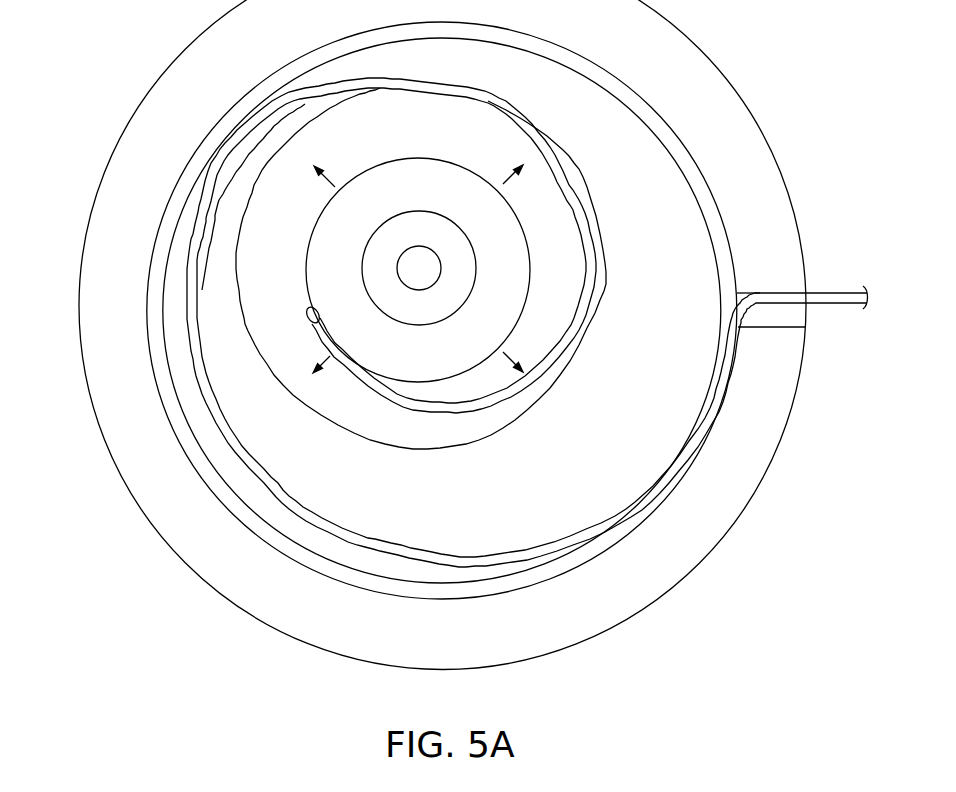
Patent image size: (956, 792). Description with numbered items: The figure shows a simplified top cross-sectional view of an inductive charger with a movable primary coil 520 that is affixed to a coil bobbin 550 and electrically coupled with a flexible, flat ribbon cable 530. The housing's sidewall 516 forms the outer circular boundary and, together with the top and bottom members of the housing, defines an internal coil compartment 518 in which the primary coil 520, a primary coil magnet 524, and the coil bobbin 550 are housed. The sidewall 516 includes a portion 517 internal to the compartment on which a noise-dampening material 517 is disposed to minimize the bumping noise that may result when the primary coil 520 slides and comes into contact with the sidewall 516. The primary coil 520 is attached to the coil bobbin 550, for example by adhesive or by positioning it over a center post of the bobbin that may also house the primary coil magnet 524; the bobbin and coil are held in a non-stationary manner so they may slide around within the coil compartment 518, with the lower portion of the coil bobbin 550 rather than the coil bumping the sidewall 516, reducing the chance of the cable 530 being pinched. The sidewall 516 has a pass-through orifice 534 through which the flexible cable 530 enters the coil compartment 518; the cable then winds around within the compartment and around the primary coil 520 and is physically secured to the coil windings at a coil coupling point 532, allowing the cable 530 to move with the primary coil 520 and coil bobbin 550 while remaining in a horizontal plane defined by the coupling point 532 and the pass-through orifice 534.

The sidewall 516 is at (111, 393).
The noise-dampening material 517 is at (455, 594).
The coil compartment 518 is at (627, 124).
The primary coil 520 is at (414, 182).
The primary coil magnet 524 is at (418, 287).
The flexible, flat ribbon cable 530 is at (248, 134).
The coil coupling point 532 is at (309, 309).
The pass-through orifice 534 is at (778, 320).
The coil bobbin 550 is at (261, 203).